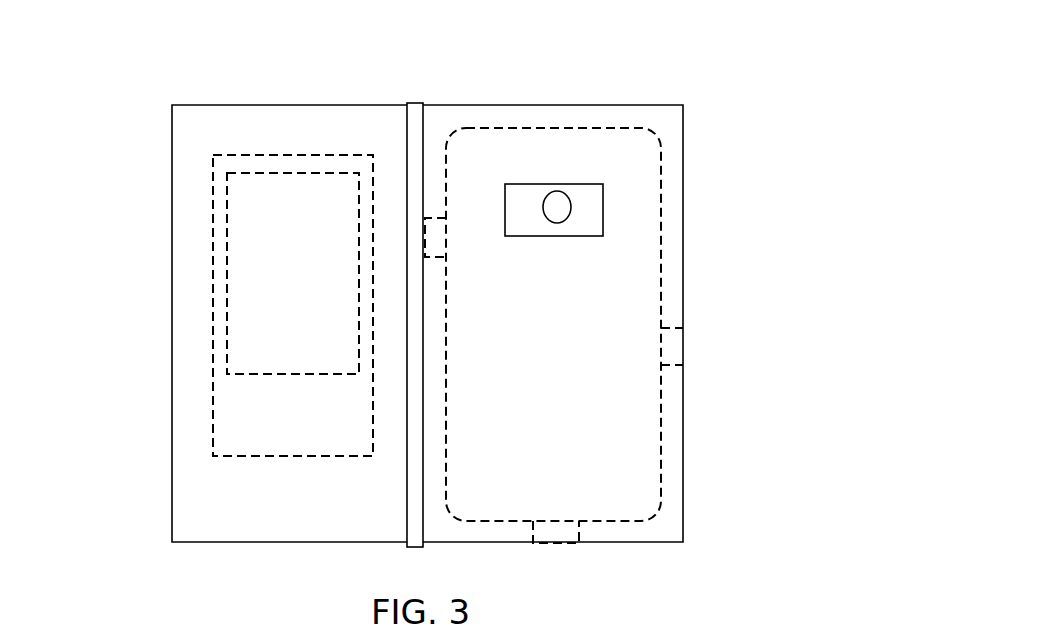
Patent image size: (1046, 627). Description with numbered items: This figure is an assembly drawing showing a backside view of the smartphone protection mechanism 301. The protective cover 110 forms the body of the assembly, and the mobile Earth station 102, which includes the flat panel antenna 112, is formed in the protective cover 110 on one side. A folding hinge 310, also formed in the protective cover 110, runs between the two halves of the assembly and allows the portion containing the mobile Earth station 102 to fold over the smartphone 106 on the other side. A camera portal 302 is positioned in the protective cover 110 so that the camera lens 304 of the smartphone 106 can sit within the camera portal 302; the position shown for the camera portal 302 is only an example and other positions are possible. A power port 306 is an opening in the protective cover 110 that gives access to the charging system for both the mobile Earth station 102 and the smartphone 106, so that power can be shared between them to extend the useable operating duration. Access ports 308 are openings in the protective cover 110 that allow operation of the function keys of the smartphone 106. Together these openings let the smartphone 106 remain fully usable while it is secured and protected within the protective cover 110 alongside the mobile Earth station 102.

The smartphone protection mechanism 301 is at (418, 297).
The protective cover 110 is at (187, 516).
The folding hinge 310 is at (413, 128).
The mobile Earth station 102 is at (318, 430).
The flat panel antenna 112 is at (312, 226).
The smartphone 106 is at (575, 369).
The camera portal 302 is at (591, 203).
The camera lens 304 is at (557, 200).
The access ports 308 is at (438, 240).
The power port 306 is at (555, 530).